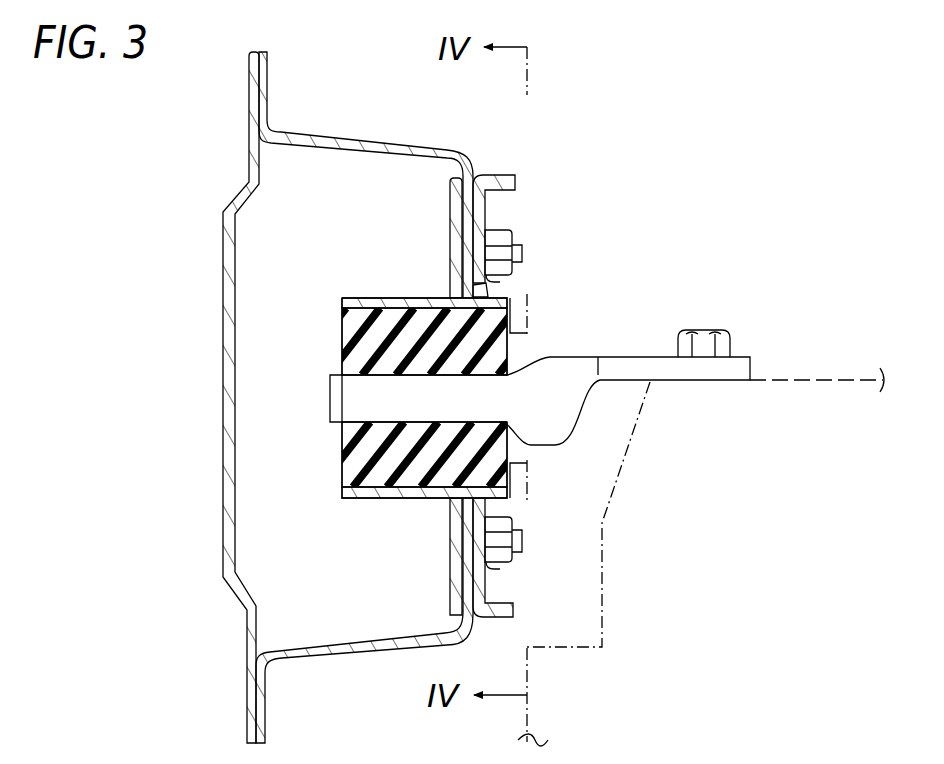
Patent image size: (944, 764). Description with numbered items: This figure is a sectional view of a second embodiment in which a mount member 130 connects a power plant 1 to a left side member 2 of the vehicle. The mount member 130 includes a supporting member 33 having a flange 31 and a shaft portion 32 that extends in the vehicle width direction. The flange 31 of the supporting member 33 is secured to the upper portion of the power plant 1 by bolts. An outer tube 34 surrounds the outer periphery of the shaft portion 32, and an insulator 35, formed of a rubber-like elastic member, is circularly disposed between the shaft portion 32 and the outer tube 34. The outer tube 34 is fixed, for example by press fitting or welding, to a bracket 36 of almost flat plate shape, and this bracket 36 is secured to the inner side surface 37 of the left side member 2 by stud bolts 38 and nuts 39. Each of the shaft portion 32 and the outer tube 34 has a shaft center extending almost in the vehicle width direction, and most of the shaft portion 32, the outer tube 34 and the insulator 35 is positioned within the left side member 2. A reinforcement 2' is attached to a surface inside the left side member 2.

The power plant 1 is at (855, 380).
The left side member 2 is at (191, 397).
The reinforcement 2' is at (432, 396).
The flange 31 is at (742, 355).
The shaft portion 32 is at (337, 397).
The supporting member 33 is at (631, 351).
The outer tube 34 is at (356, 297).
The insulator 35 is at (347, 476).
The bracket 36 is at (492, 201).
The inner side surface 37 is at (484, 287).
The stud bolts 38 is at (522, 253).
The nuts 39 is at (492, 223).
The mount member 130 is at (640, 208).